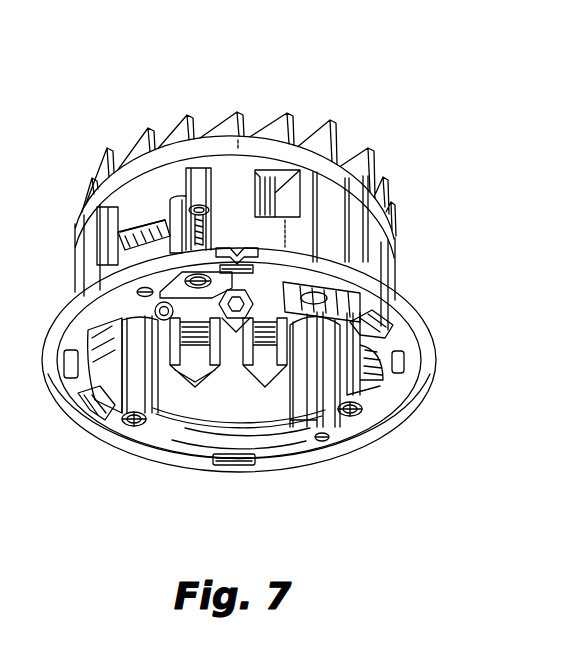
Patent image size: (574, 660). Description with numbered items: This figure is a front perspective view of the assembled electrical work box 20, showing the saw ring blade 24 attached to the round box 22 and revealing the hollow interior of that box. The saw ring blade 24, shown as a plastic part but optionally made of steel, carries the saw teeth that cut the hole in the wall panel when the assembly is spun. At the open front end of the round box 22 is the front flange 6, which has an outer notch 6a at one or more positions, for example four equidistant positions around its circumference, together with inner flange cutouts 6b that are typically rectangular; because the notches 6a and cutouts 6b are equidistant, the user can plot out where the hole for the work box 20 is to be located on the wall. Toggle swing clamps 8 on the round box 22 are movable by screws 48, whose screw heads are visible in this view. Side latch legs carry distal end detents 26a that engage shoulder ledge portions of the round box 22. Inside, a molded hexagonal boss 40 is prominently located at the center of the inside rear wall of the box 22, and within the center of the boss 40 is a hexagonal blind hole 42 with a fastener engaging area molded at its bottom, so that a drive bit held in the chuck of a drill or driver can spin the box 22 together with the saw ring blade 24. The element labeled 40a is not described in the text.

The electrical work box 20 is at (81, 116).
The toggle swing clamp 8 is at (143, 218).
The saw ring blade 24 is at (338, 126).
The round box 22 is at (331, 208).
The spring seat screw 40a is at (212, 211).
The screw 48 is at (208, 279).
The molded hexagonal boss 40 is at (275, 290).
The distal end detent 26a is at (382, 322).
The front flange 6 is at (414, 305).
The outer notch 6a is at (45, 366).
The inner flange cutout 6b is at (238, 470).
The hexagonal blind hole 42 is at (237, 332).